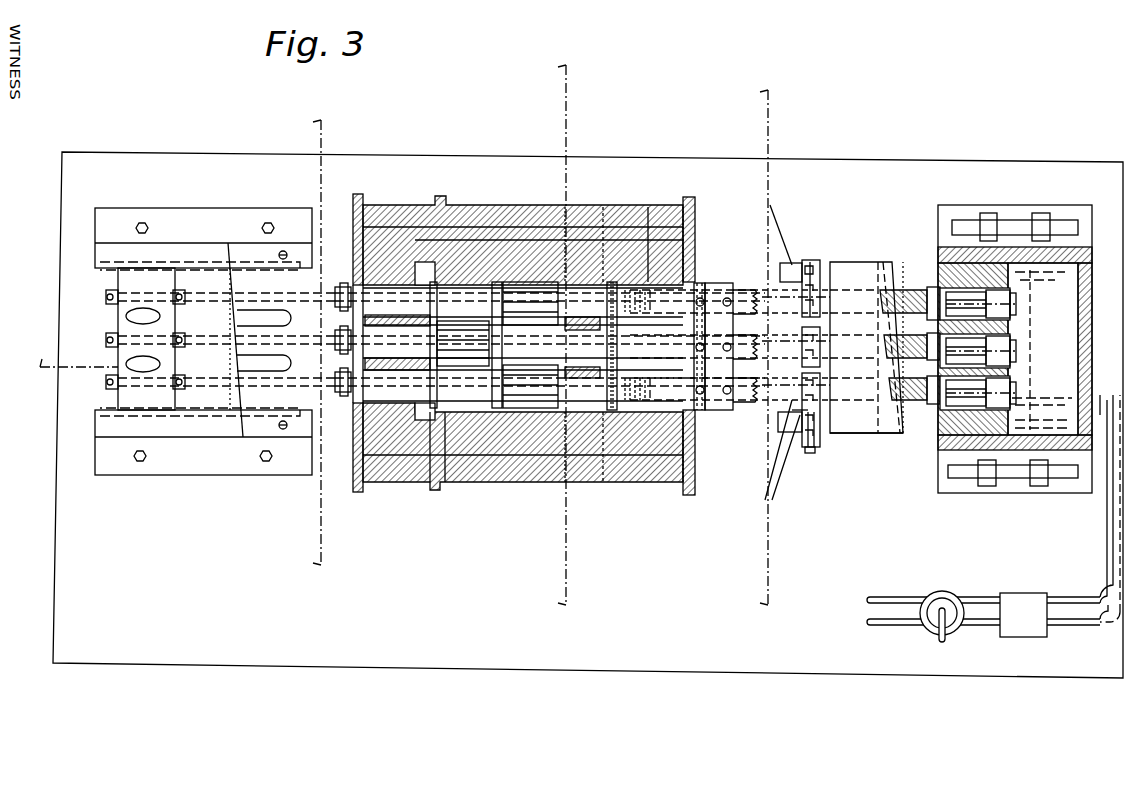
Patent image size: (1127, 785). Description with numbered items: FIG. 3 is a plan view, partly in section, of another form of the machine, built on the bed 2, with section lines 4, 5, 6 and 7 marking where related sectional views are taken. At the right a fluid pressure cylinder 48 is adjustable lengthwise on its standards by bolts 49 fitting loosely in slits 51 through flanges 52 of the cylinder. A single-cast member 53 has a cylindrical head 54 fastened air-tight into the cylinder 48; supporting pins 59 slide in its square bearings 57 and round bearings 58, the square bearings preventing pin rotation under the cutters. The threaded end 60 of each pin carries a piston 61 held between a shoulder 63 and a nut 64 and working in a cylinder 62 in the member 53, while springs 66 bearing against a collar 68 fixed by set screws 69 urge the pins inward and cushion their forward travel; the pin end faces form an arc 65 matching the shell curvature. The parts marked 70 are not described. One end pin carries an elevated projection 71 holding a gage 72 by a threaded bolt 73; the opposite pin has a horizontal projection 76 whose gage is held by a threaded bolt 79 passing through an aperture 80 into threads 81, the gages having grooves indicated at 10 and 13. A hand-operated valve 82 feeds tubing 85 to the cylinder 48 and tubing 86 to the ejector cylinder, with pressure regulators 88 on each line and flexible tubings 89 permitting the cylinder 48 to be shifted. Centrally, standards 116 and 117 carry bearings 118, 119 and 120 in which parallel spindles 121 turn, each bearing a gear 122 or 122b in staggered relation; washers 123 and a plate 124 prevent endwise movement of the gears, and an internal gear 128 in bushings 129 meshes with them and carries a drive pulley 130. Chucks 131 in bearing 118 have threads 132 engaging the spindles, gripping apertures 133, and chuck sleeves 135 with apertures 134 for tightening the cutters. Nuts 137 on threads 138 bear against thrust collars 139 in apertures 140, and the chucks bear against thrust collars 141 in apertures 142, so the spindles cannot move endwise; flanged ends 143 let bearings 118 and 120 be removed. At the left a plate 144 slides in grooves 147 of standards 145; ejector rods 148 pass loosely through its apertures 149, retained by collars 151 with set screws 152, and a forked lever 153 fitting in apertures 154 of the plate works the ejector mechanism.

The bed 2 is at (588, 415).
The section line 4- 4 is at (570, 388).
The section line 5- 5 is at (568, 334).
The section line 6- 6 is at (320, 340).
The section line 7- 7 is at (768, 346).
The actuating member 10 is at (796, 345).
The groove 13 is at (796, 413).
The fluid pressure cylinder 48 is at (1086, 264).
The bolts 49 is at (1044, 214).
The slits 51 is at (1026, 222).
The flanges 52 is at (983, 213).
The member 53 is at (866, 347).
The cylindrical head 54 is at (1006, 290).
The square bearings 57 is at (862, 433).
The round bearings 58 is at (915, 375).
The supporting pins 59 is at (870, 347).
The threaded end of pin 60 is at (1016, 304).
The piston 61 is at (1003, 381).
The cylinder 62 is at (1016, 392).
The shoulder 63 is at (1003, 340).
The nut 64 is at (1016, 353).
The arc 65 is at (777, 220).
The springs 66 is at (905, 280).
The collar 68 is at (912, 331).
The set screws 69 is at (903, 406).
The valve stem 70 is at (933, 287).
The elevated projection 71 is at (815, 258).
The gage 72 is at (785, 265).
The threaded bolt 73 is at (812, 260).
The projection 76 is at (812, 442).
The threaded bolt 79 is at (810, 450).
The aperture 80 is at (786, 450).
The threads 81 is at (800, 421).
The hand operated valve 82 is at (947, 635).
The tubing 85 is at (992, 600).
The tubing 86 is at (898, 624).
The pressure regulators 88 is at (1023, 615).
The flexible tubings 89 is at (1110, 540).
The standard 116 is at (632, 207).
The standard 117 is at (406, 482).
The bearing 118 is at (660, 218).
The bearing 119 is at (579, 207).
The bearing 120 is at (398, 225).
The spindles 121 is at (373, 341).
The gear 122 is at (532, 282).
The gear 122b is at (450, 320).
The washers 123 is at (692, 301).
The plate 124 is at (536, 470).
The internal gear 128 is at (498, 282).
The bushings 129 is at (430, 482).
The pulley 130 is at (463, 482).
The chucks 131 is at (726, 282).
The threads 132 is at (692, 367).
The apertures 133 is at (699, 410).
The apertures 134 is at (727, 400).
The chuck sleeve 135 is at (715, 414).
The nuts 137 is at (351, 404).
The threads 138 is at (348, 395).
The thrust collars 139 is at (347, 287).
The apertures 140 is at (360, 238).
The thrust collars 141 is at (606, 230).
The apertures 142 is at (614, 482).
The flanged ends 143 is at (690, 197).
The plate 144 is at (146, 339).
The standards 145 is at (203, 341).
The grooves 147 is at (100, 262).
The ejector rods 148 is at (232, 385).
The apertures 149 is at (220, 392).
The collars 151 is at (106, 338).
The set screw 152 is at (106, 297).
The forked lever 153 is at (160, 364).
The apertures 154 is at (160, 316).